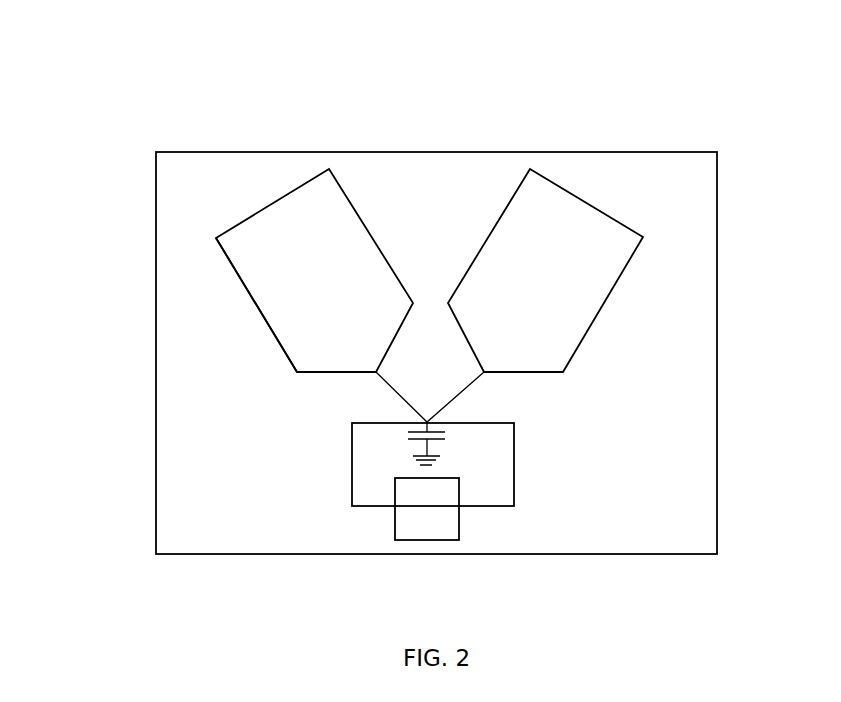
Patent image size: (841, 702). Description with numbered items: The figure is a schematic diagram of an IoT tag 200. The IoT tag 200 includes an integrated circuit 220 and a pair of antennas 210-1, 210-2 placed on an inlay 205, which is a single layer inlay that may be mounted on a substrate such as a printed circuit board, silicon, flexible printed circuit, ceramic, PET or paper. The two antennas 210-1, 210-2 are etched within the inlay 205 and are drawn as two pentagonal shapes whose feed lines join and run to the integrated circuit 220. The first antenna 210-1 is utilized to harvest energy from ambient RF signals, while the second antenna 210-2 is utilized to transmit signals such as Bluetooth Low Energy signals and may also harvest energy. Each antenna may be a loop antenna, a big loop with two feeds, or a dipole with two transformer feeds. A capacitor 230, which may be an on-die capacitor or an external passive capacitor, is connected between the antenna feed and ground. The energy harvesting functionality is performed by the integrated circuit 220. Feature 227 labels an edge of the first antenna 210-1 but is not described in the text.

The IoT tag 200 is at (183, 65).
The inlay 205 is at (169, 203).
The first antenna 210-1 is at (355, 228).
The second antenna 210-2 is at (574, 207).
The antenna element edge 227 is at (293, 308).
The capacitor 230 is at (405, 437).
The integrated circuit 220 is at (395, 510).